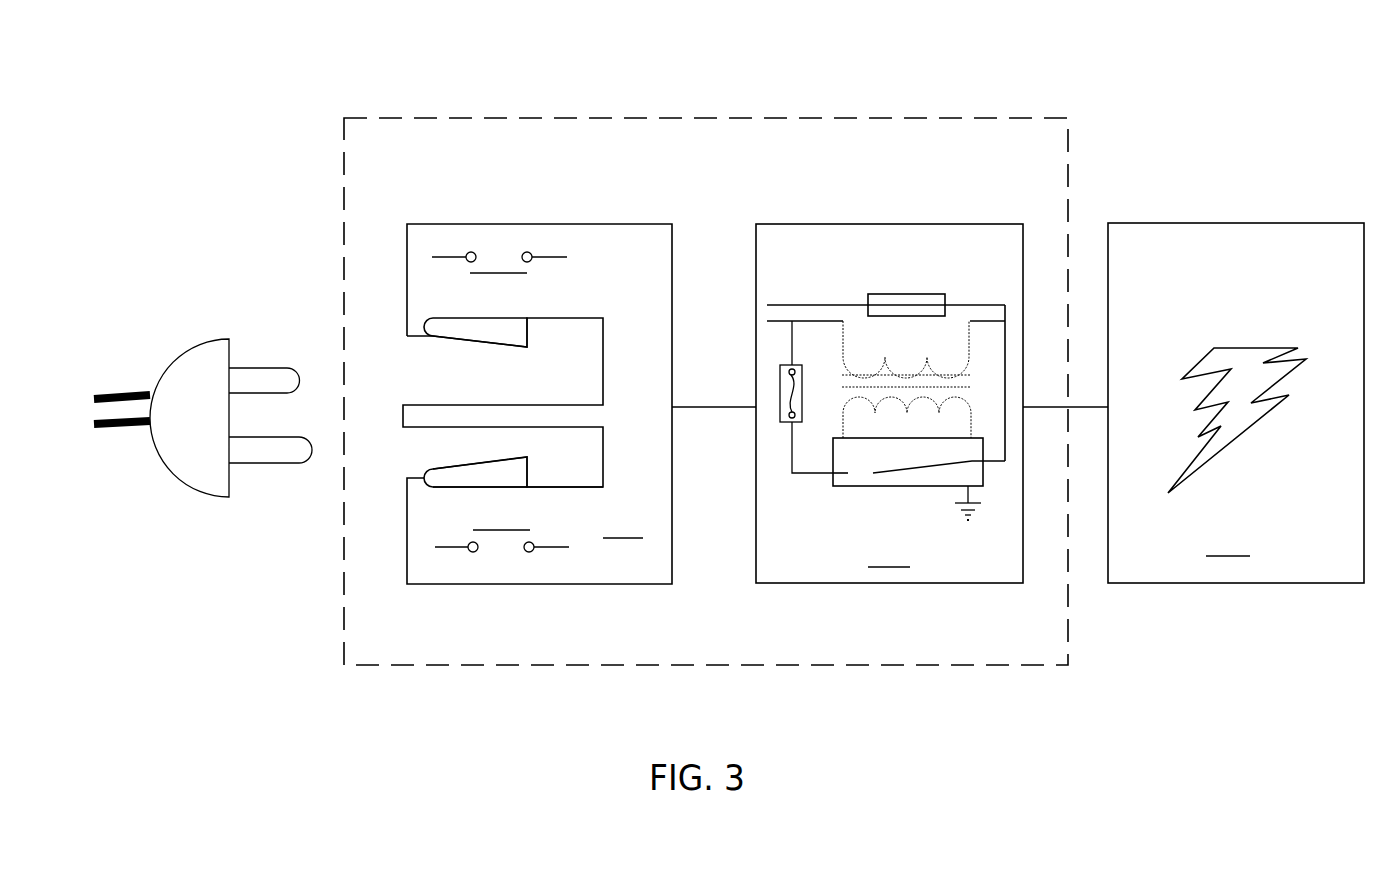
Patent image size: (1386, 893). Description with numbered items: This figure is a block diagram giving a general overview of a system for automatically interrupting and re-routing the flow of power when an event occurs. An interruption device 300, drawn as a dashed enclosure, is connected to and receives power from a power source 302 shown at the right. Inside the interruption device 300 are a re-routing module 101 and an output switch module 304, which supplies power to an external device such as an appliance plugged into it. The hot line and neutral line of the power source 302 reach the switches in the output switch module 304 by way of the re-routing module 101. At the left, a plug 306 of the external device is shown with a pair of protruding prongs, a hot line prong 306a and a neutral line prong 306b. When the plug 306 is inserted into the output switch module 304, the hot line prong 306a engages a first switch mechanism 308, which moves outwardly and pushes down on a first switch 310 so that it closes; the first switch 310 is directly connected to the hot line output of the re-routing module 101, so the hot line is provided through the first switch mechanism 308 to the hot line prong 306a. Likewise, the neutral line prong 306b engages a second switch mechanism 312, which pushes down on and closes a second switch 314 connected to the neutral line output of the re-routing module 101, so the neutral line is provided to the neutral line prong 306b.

The interruption device 300 is at (873, 113).
The power source 302 is at (1236, 372).
The output switch module 304 is at (512, 398).
The re-routing module 101 is at (889, 383).
The plug 306 is at (183, 293).
The hot line prong 306a is at (266, 369).
The neutral line prong 306b is at (266, 463).
The first switch mechanism 308 is at (448, 323).
The first switch 310 is at (470, 242).
The second switch mechanism 312 is at (442, 477).
The second switch 314 is at (488, 572).